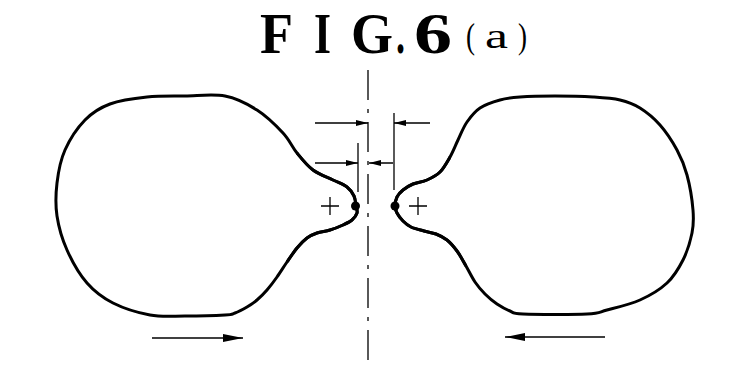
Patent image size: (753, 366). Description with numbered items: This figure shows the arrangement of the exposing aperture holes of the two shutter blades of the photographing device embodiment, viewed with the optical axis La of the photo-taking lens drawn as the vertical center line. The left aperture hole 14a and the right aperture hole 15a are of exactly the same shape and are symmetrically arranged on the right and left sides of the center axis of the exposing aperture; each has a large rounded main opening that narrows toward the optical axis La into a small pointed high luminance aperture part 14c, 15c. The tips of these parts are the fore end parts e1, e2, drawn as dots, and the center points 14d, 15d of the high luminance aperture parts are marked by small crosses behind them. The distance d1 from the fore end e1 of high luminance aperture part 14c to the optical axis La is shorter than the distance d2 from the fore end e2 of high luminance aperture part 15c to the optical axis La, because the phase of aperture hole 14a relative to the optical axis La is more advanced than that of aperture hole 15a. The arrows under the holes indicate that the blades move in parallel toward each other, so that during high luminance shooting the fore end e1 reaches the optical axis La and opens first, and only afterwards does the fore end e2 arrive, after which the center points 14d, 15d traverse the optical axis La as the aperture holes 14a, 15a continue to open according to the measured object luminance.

The aperture hole 14a is at (137, 97).
The high luminance aperture part 14c is at (338, 181).
The center point 14d is at (322, 213).
The aperture hole 15a is at (620, 97).
The high luminance aperture part 15c is at (413, 182).
The center point 15d is at (420, 213).
The fore end part e1 is at (360, 212).
The fore end part e2 is at (390, 212).
The distance d1 is at (363, 165).
The distance d2 is at (379, 122).
The optical axis La is at (372, 93).